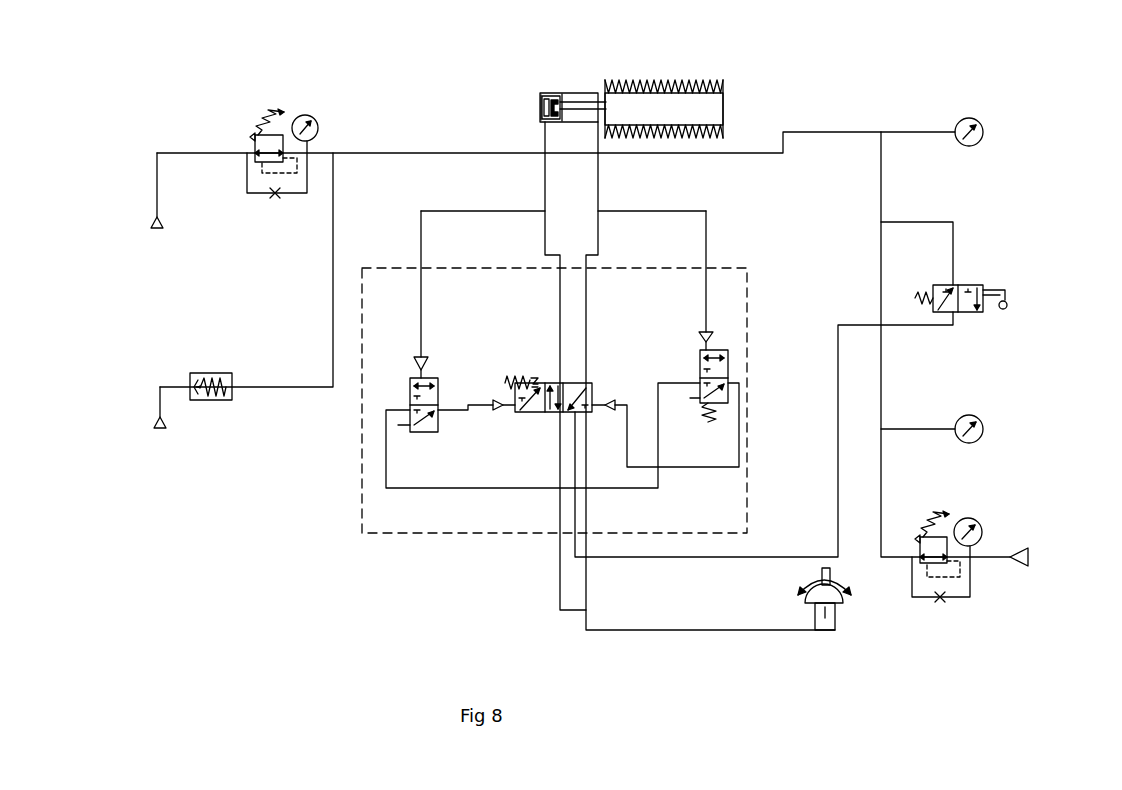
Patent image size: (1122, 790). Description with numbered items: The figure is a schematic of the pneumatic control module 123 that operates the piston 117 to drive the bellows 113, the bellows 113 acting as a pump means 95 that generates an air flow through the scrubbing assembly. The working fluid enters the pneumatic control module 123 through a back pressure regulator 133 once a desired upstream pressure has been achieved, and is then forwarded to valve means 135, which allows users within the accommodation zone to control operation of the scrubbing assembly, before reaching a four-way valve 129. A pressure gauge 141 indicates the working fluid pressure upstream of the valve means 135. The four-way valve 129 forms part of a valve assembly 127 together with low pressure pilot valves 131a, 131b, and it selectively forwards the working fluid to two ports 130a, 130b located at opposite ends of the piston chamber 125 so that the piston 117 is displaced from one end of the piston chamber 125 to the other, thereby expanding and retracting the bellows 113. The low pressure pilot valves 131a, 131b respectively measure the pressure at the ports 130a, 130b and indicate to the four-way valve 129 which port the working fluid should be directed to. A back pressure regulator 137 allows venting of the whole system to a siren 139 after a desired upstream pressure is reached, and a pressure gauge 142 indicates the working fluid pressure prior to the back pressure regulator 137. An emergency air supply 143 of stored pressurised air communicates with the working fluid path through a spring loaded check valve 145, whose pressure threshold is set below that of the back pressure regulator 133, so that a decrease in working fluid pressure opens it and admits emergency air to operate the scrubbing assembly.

The pump means 95 is at (853, 595).
The bellows 113 is at (666, 75).
The piston 117 is at (574, 97).
The pneumatic control module 123 is at (137, 134).
The piston chamber 125 is at (540, 98).
The valve assembly 127 is at (395, 295).
The four-way valve 129 is at (523, 370).
The port 130a is at (541, 120).
The port 130b is at (575, 128).
The low pressure pilot valve 131a is at (405, 375).
The low pressure pilot valve 131b is at (770, 290).
The back pressure regulator 133 is at (241, 87).
The valve means 135 is at (985, 270).
The back pressure regulator 137 is at (988, 520).
The siren 139 is at (1022, 576).
The pressure gauge 141 is at (975, 117).
The pressure gauge 142 is at (988, 420).
The emergency air supply 143 is at (150, 398).
The spring loaded check valve 145 is at (210, 373).